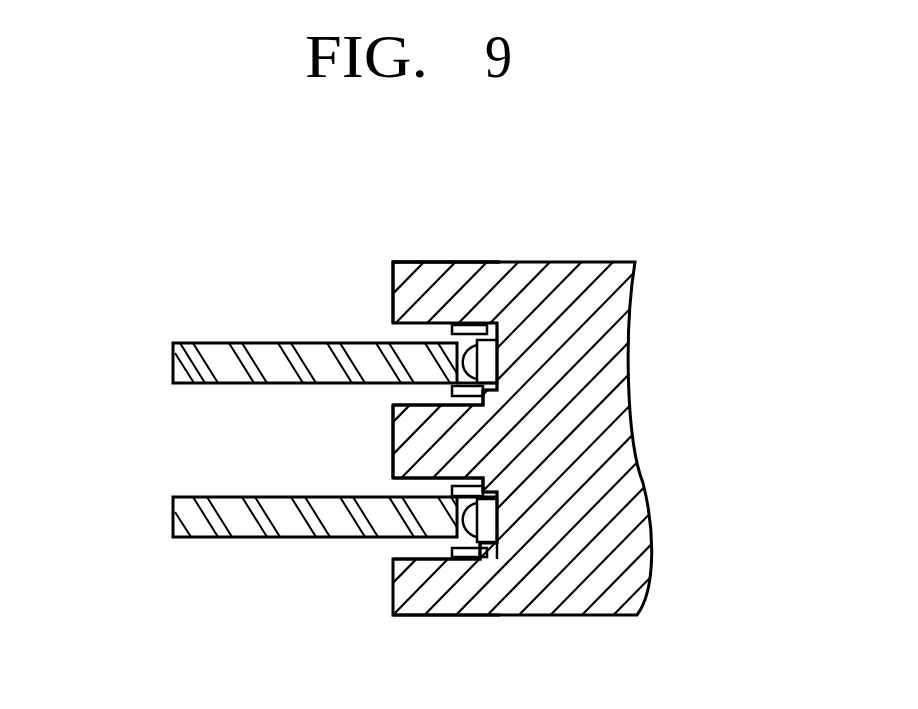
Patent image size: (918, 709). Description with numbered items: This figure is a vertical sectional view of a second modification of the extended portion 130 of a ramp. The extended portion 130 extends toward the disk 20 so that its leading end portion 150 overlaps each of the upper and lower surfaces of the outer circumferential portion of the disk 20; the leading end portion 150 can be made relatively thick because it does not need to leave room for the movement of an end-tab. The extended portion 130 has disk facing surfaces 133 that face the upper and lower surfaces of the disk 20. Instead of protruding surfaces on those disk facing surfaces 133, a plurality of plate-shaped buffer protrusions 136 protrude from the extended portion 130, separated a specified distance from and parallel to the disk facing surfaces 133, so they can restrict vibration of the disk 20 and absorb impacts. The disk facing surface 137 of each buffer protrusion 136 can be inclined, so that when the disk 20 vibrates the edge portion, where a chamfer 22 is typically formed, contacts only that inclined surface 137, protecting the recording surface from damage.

The disk 20 is at (172, 510).
The chamfer 22 is at (485, 330).
The extended portion 130 is at (583, 262).
The disk facing surfaces 133 is at (396, 323).
The buffer protrusions 136 is at (456, 390).
The disk facing surface of buffer protrusion 137 is at (497, 345).
The leading end portion 150 is at (406, 262).